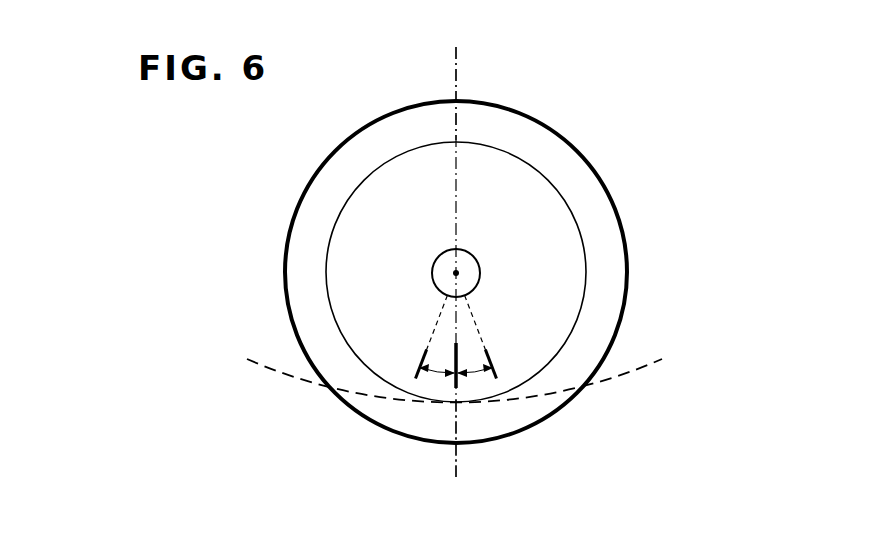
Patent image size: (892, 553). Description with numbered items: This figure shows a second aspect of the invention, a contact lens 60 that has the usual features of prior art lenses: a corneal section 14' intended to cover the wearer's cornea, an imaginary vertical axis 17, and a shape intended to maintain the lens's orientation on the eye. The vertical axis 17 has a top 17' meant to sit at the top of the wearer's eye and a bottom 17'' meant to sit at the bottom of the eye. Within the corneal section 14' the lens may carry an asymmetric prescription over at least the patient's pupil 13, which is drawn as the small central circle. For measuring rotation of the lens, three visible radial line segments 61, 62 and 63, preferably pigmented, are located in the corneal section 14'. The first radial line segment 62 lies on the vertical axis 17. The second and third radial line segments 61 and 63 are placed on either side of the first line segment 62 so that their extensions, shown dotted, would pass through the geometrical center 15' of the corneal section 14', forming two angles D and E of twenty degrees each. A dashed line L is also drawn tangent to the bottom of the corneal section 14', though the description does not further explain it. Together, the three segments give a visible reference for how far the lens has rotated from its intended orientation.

The pupil 13 is at (478, 263).
The corneal section 14' is at (486, 272).
The geometrical center 15' is at (423, 250).
The vertical axis 17 is at (485, 262).
The top of vertical axis 17' is at (490, 93).
The bottom of vertical axis 17'' is at (491, 441).
The lens 60 is at (627, 261).
The second radial line segment 61 is at (425, 360).
The first radial line segment 62 is at (455, 344).
The third radial line segment 63 is at (488, 355).
The angle D is at (437, 359).
The angle E is at (475, 359).
The tangent line L is at (633, 372).